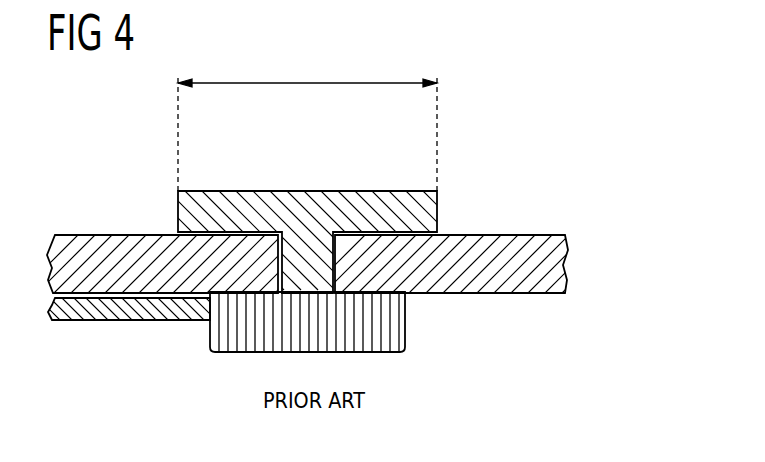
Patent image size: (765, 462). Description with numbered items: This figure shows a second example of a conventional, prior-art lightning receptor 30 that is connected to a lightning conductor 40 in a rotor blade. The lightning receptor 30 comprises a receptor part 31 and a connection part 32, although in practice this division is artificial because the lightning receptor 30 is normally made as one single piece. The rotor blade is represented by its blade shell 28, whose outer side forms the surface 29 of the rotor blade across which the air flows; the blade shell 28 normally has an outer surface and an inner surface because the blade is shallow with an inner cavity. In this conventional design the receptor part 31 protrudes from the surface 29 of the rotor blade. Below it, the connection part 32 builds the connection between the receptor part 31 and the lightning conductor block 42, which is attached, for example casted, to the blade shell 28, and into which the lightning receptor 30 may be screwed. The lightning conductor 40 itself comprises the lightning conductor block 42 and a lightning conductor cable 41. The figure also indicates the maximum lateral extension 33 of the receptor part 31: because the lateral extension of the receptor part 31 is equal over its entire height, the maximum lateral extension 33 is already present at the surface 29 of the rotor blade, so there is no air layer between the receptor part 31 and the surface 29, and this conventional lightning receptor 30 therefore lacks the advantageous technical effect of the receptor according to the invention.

The blade shell 28 is at (102, 250).
The surface of the rotor blade 29 is at (160, 233).
The lightning receptor 30 is at (307, 242).
The receptor part 31 is at (385, 203).
The connection part 32 is at (300, 277).
The maximum lateral extension 33 is at (310, 82).
The lightning conductor 40 is at (179, 366).
The lightning conductor cable 41 is at (122, 312).
The lightning conductor block 42 is at (405, 330).